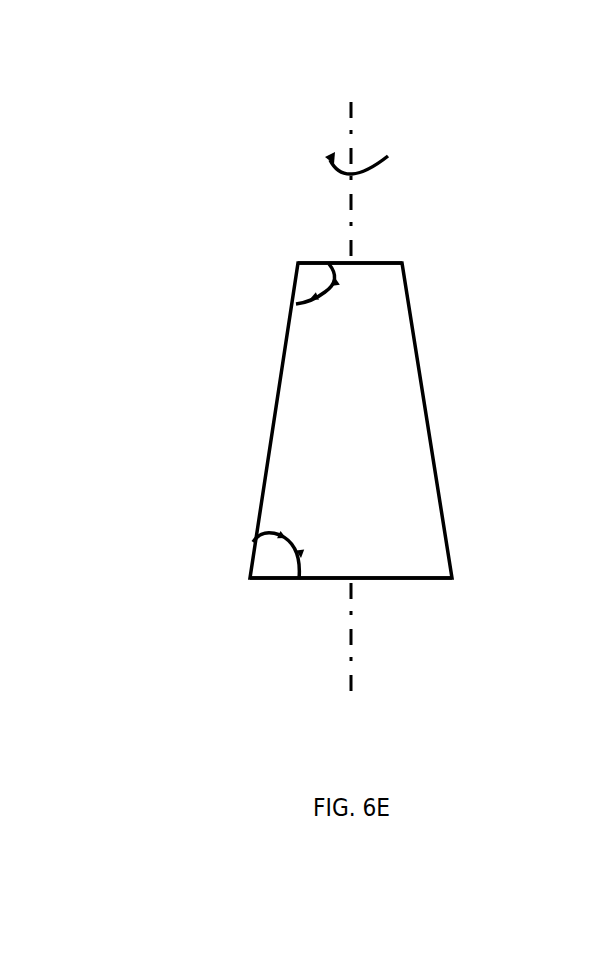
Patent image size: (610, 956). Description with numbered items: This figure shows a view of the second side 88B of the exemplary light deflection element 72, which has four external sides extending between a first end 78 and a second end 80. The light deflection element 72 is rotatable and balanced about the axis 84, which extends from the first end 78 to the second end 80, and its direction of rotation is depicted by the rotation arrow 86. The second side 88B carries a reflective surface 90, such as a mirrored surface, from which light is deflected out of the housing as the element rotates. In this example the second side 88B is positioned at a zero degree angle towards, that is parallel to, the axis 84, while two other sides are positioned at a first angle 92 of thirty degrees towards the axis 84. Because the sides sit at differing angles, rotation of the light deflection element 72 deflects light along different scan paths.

The light deflection element 72 is at (500, 125).
The first end 78 is at (412, 582).
The second end 80 is at (375, 262).
The axis 84 is at (355, 113).
The rotation arrow 86 is at (326, 160).
The second side 88B is at (412, 443).
The reflective surface 90 is at (358, 387).
The first angle 92 is at (305, 301).